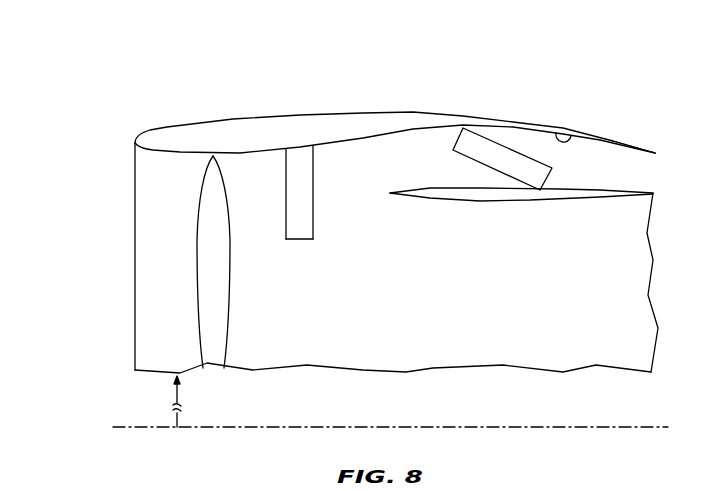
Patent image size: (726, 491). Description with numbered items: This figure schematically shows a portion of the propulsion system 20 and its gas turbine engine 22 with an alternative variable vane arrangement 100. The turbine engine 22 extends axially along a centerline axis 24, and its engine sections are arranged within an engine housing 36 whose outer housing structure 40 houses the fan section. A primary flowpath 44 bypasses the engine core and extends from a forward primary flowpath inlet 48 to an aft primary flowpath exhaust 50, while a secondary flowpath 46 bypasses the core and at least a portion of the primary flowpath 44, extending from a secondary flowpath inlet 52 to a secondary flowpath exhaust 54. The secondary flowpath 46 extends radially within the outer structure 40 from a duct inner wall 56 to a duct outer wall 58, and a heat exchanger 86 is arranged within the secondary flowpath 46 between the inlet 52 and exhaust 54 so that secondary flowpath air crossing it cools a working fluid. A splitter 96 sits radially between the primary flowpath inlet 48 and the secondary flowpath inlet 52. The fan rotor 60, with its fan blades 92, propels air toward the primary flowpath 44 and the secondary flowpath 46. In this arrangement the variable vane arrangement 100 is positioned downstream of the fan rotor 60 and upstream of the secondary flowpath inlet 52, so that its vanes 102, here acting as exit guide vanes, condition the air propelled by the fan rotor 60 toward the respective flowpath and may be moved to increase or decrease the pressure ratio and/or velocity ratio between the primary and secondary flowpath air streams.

The propulsion system 20 is at (389, 103).
The gas turbine engine 22 is at (161, 72).
The centerline axis 24 is at (121, 428).
The engine housing 36 is at (471, 88).
The outer housing structure 40 is at (373, 112).
The primary flowpath 44 is at (460, 302).
The secondary flowpath 46 is at (463, 179).
The primary flowpath inlet 48 is at (406, 297).
The primary flowpath exhaust 50 is at (655, 210).
The secondary flowpath inlet 52 is at (403, 168).
The secondary flowpath exhaust 54 is at (650, 174).
The duct inner wall 56 is at (582, 191).
The duct outer wall 58 is at (568, 138).
The fan rotor 60 is at (222, 320).
The heat exchanger 86 is at (510, 148).
The fan blade 92 is at (195, 291).
The splitter 96 is at (424, 199).
The variable vane arrangement 100 is at (300, 144).
The vanes 102 is at (283, 228).